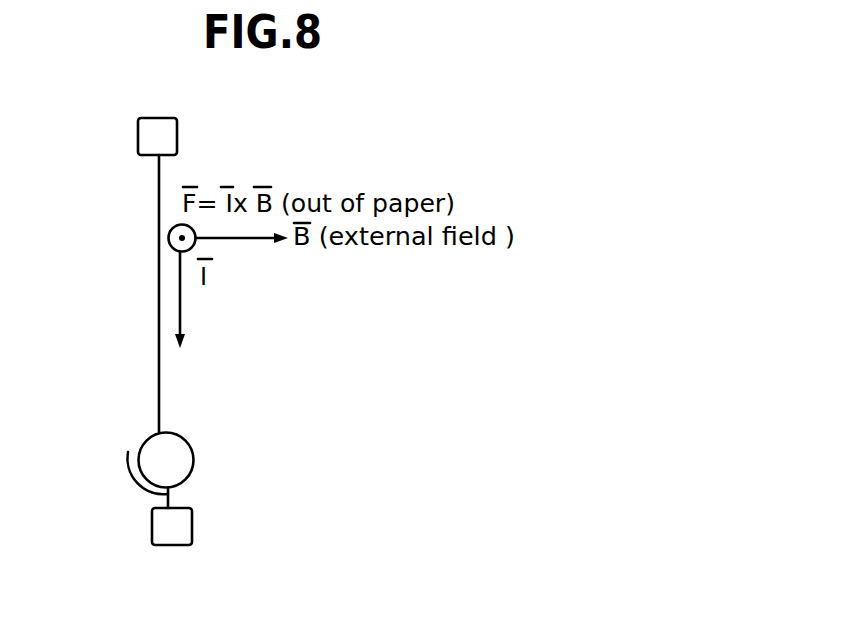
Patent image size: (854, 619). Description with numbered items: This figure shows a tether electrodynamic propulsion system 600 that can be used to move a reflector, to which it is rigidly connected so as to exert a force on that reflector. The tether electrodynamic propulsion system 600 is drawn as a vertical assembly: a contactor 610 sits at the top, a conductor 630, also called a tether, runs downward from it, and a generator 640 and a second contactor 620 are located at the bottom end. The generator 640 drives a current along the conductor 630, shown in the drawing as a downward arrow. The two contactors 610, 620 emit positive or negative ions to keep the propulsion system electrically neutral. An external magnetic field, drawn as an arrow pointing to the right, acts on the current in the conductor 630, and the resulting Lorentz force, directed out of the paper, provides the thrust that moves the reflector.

The tether electrodynamic propulsion system 600 is at (148, 564).
The contactor 610 is at (143, 156).
The contactor 620 is at (152, 542).
The conductor 630 is at (158, 413).
The generator 640 is at (172, 432).